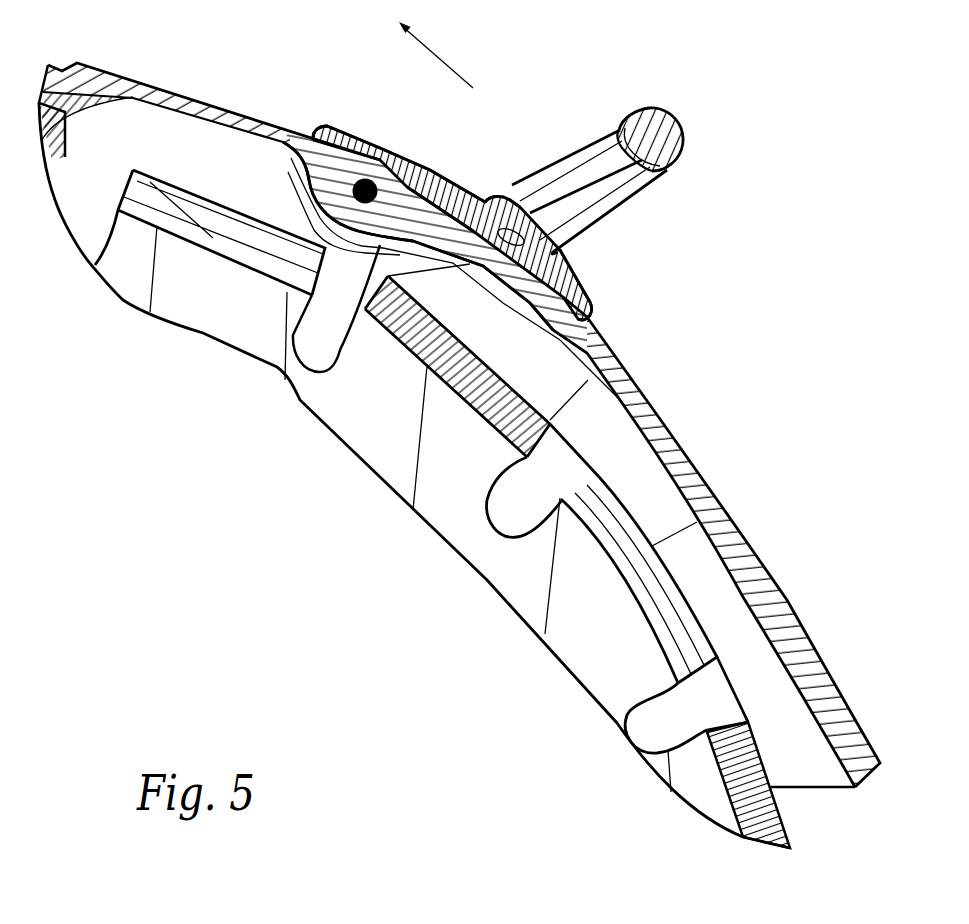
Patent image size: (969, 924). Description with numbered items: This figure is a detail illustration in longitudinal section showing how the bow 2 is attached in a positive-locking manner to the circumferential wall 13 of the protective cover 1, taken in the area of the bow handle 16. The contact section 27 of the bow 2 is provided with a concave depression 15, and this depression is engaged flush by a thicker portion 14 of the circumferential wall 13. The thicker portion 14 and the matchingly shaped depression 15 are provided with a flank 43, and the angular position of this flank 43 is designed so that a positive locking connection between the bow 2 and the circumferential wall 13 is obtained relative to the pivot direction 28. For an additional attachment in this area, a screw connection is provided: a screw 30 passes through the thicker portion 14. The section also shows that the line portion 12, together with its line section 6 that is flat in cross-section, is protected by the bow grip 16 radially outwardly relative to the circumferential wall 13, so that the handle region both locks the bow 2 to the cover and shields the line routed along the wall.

The protective cover 1 is at (783, 582).
The bow 2 is at (664, 207).
The line section 6 is at (562, 262).
The line portion 12 is at (493, 198).
The circumferential wall 13 is at (703, 489).
The thicker portion 14 is at (325, 192).
The concave depression 15 is at (376, 145).
The bow handle 16 is at (672, 133).
The contact section 27 is at (447, 190).
The pivot direction 28 is at (437, 57).
The screw 30 is at (368, 205).
The flank 43 is at (441, 185).